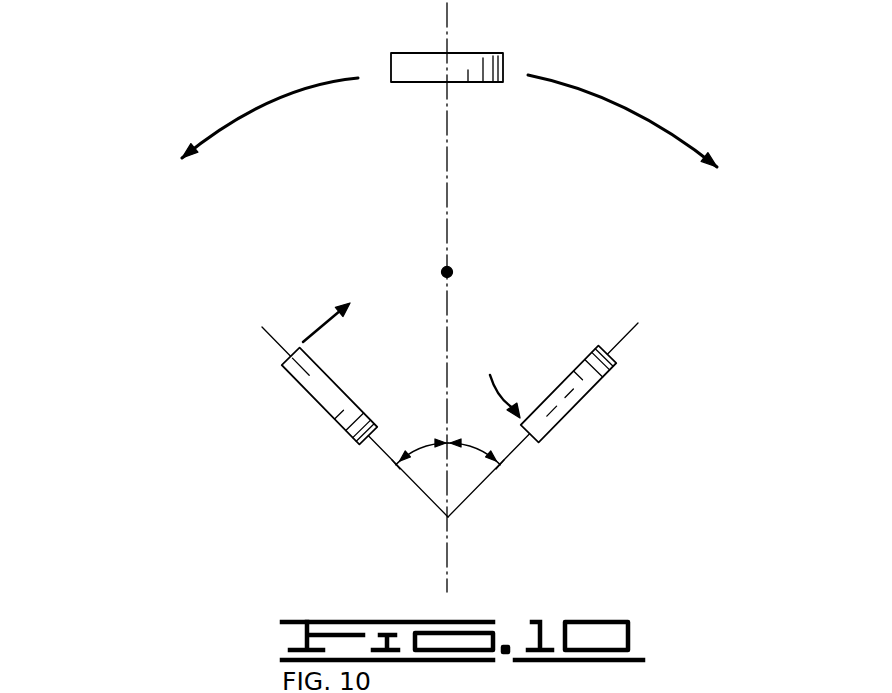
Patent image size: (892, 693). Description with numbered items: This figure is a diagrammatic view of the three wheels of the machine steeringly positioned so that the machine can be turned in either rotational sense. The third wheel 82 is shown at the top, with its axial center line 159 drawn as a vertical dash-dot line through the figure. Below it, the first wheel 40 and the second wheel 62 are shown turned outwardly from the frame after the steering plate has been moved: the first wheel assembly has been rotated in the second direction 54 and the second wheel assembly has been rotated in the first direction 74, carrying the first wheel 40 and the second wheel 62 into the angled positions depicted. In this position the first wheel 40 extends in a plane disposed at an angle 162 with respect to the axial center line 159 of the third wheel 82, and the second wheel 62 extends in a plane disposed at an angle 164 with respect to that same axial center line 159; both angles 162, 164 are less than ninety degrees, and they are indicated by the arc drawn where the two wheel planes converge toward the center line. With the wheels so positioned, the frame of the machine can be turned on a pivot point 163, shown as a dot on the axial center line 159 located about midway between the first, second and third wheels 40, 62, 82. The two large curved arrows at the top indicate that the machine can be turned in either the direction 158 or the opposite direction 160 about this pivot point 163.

The first wheel 40 is at (589, 390).
The second direction 54 is at (490, 375).
The second wheel 62 is at (316, 389).
The first direction 74 is at (318, 323).
The third wheel 82 is at (483, 62).
The direction 158 is at (627, 108).
The axial center line 159 is at (445, 163).
The direction 160 is at (270, 102).
The angle 162 is at (472, 450).
The pivot point 163 is at (452, 267).
The angle 164 is at (424, 450).